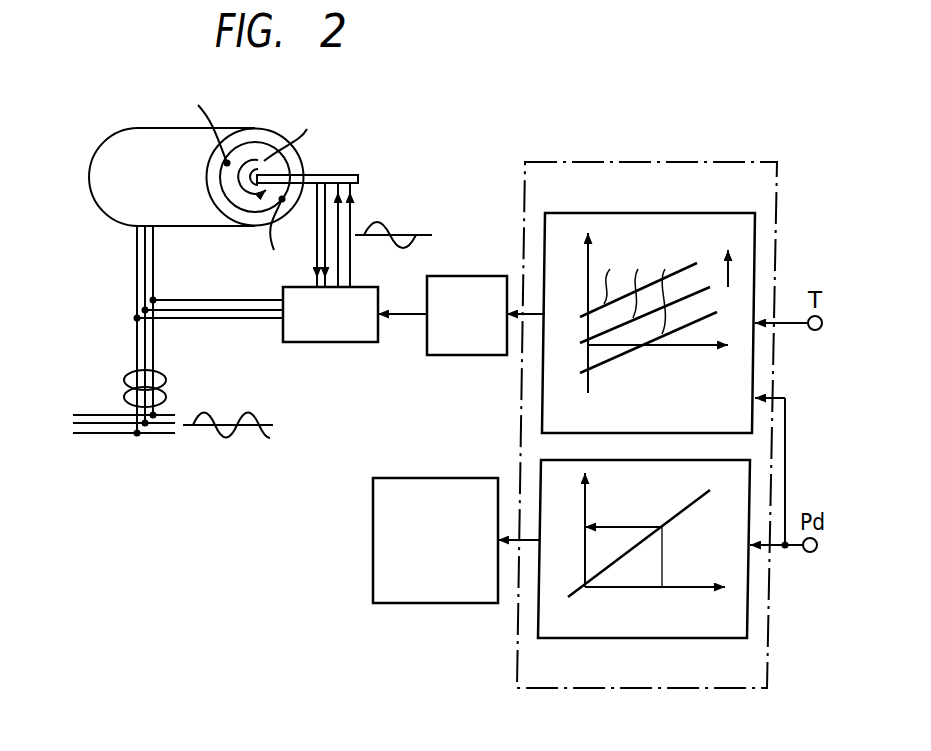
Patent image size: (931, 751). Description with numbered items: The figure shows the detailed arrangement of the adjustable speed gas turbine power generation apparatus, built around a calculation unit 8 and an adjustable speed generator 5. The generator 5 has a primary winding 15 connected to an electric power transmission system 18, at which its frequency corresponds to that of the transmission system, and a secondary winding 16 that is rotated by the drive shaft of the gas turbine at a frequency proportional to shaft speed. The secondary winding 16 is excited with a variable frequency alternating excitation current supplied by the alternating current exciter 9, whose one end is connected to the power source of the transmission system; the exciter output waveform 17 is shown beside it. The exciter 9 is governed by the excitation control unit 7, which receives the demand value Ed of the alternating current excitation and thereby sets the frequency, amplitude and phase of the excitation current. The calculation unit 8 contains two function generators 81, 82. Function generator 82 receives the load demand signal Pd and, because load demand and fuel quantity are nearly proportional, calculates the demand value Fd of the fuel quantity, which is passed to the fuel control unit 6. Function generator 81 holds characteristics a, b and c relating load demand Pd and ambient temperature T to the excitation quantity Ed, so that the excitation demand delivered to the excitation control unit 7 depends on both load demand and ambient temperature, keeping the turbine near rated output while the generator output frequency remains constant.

The adjustable speed generator 5 is at (97, 121).
The primary winding 15 is at (103, 198).
The secondary winding 16 is at (262, 158).
The exciter output waveform fe 17 is at (411, 222).
The electric power transmission system 18 is at (253, 406).
The alternating current exciter 9 is at (364, 283).
The excitation control unit 7 is at (477, 271).
The calculation unit 8 is at (778, 192).
The function generator 81 is at (708, 211).
The function generator 82 is at (594, 640).
The fuel control unit 6 is at (453, 474).